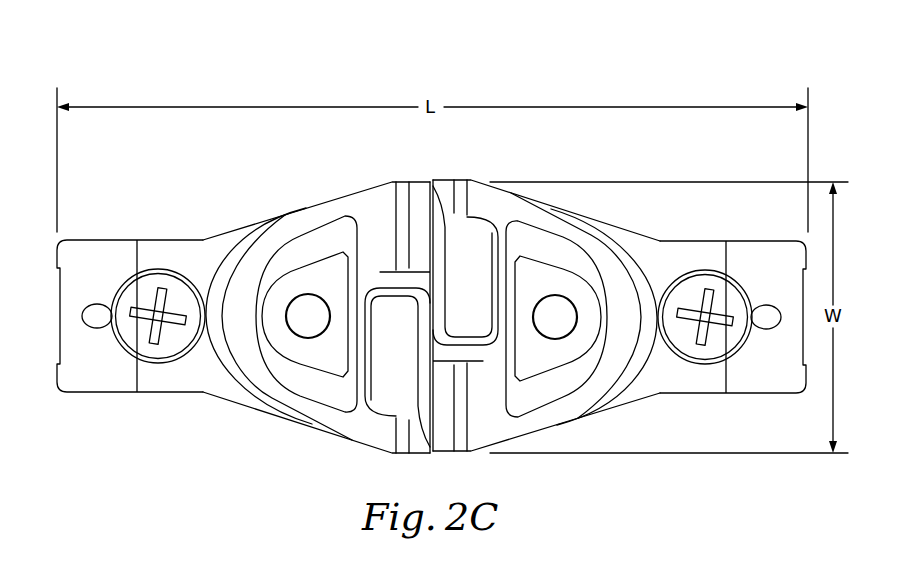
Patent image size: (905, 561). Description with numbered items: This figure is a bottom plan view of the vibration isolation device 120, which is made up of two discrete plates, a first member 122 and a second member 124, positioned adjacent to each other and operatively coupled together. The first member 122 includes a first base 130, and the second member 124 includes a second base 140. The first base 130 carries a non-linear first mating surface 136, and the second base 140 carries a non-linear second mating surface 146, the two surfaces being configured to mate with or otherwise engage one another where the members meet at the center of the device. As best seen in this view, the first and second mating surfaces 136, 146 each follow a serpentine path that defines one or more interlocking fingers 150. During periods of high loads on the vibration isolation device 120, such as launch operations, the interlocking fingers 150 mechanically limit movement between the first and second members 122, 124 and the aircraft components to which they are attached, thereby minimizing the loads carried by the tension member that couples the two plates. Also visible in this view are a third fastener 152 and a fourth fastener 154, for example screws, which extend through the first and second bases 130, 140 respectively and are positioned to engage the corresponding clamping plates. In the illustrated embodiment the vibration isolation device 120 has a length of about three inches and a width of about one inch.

The vibration isolation device 120 is at (448, 245).
The first member 122 is at (243, 300).
The second member 124 is at (619, 296).
The first base 130 is at (160, 255).
The first mating surface 136 is at (428, 210).
The second base 140 is at (632, 242).
The second mating surface 146 is at (497, 228).
The interlocking fingers 150 is at (480, 270).
The third fastener 152 is at (170, 343).
The fourth fastener 154 is at (730, 337).